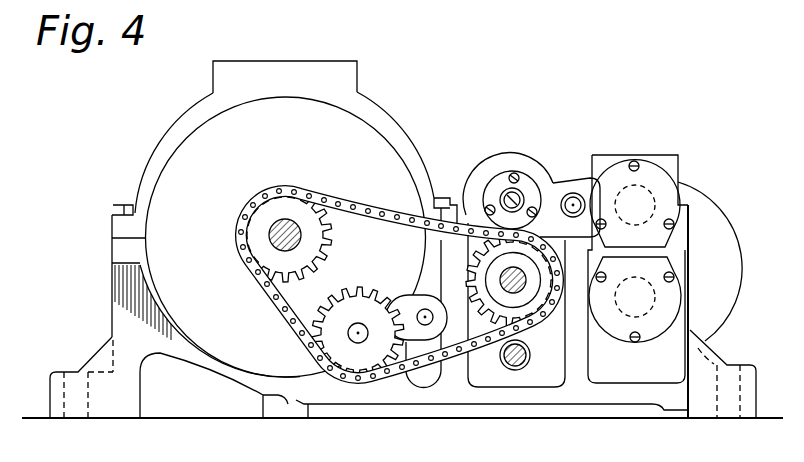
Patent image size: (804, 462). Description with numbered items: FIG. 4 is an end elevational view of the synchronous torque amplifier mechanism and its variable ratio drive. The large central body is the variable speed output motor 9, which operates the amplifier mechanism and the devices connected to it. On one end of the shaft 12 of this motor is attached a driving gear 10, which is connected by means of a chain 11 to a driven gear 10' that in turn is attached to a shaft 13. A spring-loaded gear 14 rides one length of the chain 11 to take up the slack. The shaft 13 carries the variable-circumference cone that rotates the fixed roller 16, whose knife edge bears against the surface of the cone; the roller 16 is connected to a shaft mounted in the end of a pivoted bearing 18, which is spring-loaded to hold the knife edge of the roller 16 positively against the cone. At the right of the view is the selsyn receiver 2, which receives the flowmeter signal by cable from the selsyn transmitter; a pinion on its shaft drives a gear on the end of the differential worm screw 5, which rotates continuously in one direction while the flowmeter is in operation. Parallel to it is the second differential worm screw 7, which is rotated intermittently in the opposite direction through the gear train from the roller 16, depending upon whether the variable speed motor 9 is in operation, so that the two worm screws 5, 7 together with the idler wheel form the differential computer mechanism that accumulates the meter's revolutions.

The selsyn receiver 2 is at (716, 253).
The differential worm screw 5 is at (643, 301).
The second differential worm screw 7 is at (642, 205).
The variable speed output motor 9 is at (288, 161).
The driving gear 10 is at (302, 235).
The driven gear 10' is at (526, 284).
The chain 11 is at (358, 206).
The shaft 12 is at (296, 218).
The shaft 13 is at (521, 272).
The spring-loaded gear 14 is at (373, 292).
The fixed roller 16 is at (522, 168).
The pivoted bearing 18 is at (551, 188).